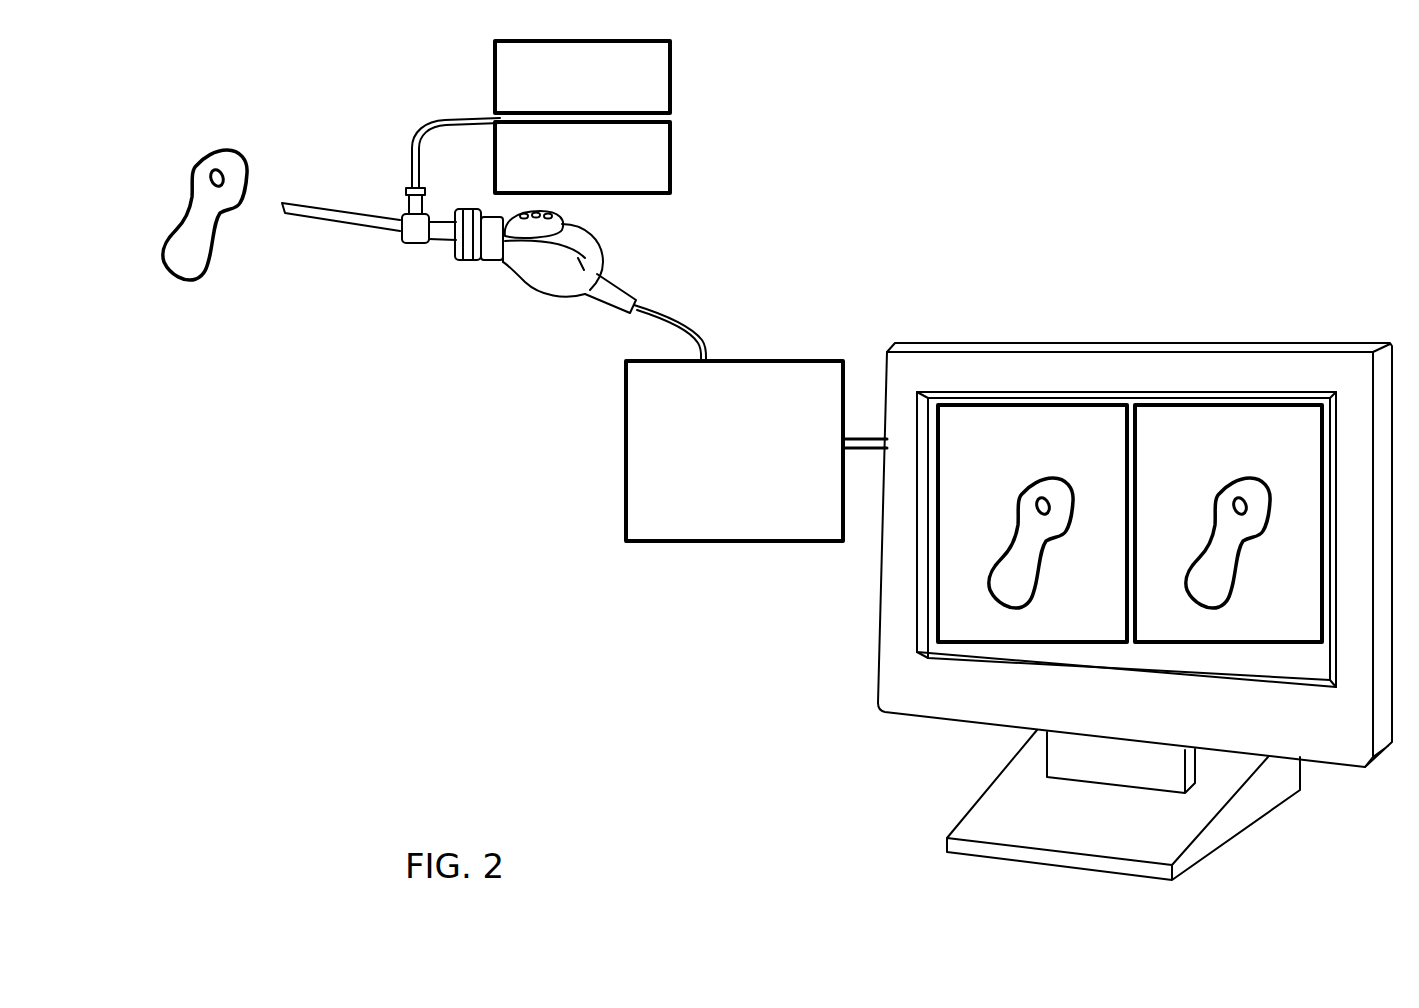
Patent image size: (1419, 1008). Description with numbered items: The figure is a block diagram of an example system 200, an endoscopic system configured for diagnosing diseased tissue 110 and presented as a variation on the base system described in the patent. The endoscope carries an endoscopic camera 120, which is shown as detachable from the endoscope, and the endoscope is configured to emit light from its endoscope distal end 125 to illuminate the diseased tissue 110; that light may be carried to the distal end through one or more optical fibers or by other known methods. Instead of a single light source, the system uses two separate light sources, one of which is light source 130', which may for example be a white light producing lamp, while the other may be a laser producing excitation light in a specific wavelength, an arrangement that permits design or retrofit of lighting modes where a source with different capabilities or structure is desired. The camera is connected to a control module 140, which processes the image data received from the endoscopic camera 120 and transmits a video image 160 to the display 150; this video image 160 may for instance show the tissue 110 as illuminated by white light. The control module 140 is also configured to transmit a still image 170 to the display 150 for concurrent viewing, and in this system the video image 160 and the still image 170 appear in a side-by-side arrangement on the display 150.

The diseased tissue 110 is at (192, 281).
The endoscopic camera 120 is at (478, 250).
The endoscope distal end 125 is at (288, 212).
The first light source 130' is at (649, 77).
The control module 140 is at (650, 538).
The display 150 is at (1135, 569).
The video image 160 is at (1018, 460).
The still image 170 is at (1193, 460).
The example system 200 is at (1137, 125).